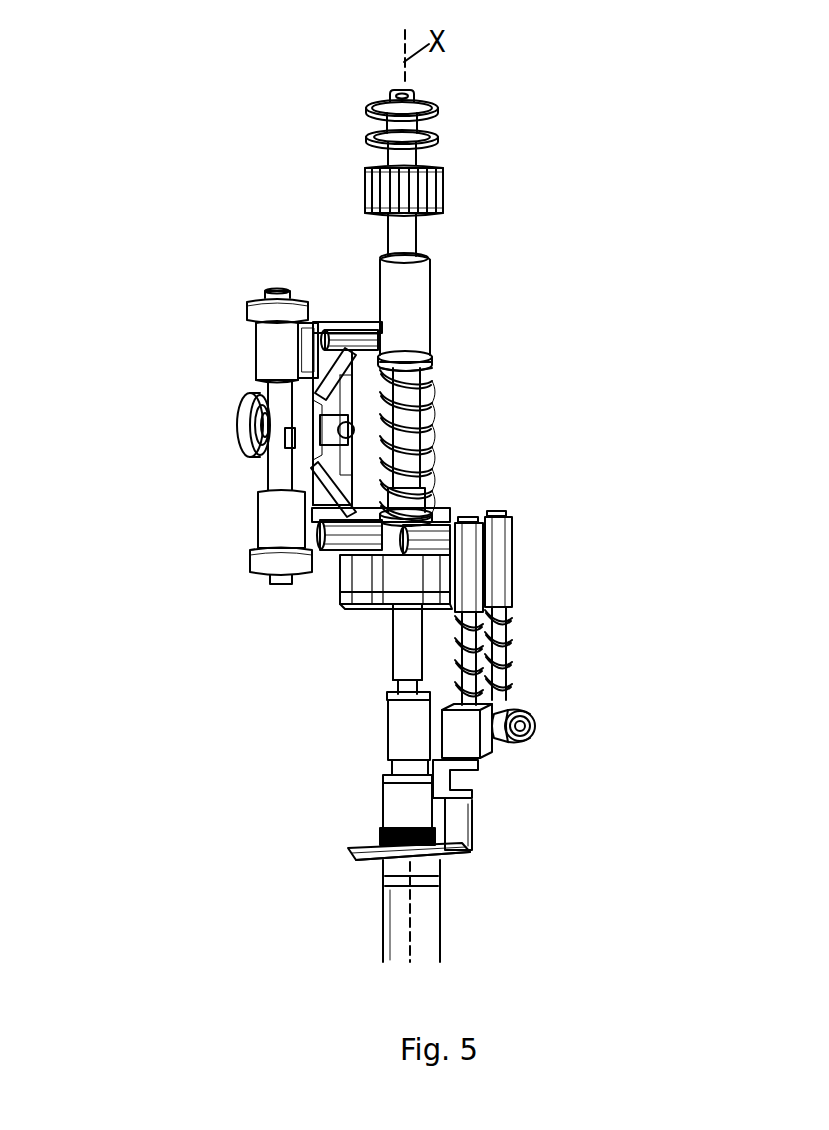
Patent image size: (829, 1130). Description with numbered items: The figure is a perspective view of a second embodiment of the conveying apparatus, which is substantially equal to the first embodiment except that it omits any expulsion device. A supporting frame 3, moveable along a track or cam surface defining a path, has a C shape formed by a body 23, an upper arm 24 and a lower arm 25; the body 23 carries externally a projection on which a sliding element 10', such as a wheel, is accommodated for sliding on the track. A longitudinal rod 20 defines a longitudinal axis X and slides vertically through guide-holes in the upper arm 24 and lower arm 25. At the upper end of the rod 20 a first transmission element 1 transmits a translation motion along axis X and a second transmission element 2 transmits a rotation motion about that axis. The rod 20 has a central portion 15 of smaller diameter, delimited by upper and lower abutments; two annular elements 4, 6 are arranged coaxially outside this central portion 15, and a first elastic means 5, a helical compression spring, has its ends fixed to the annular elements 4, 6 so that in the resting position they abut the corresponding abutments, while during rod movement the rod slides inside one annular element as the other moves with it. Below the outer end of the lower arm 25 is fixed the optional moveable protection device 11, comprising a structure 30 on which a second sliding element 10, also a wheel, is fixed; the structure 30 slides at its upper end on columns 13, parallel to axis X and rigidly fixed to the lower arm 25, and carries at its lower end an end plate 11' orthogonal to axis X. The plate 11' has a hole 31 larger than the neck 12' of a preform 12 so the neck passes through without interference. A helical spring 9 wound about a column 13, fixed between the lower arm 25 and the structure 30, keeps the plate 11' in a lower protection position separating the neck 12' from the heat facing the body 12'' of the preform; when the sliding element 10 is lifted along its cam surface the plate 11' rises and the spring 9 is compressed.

The first transmission element 1 is at (438, 103).
The second transmission element 2 is at (445, 185).
The supporting frame 3 is at (253, 338).
The annular element 4 is at (418, 380).
The first elastic means 5 is at (430, 412).
The annular element 6 is at (418, 495).
The helical spring 9 is at (493, 660).
The second sliding element 10 is at (566, 709).
The sliding element 10' is at (186, 441).
The moveable protection device 11 is at (566, 688).
The end plate 11' is at (521, 857).
The preform 12 is at (343, 911).
The neck 12' is at (512, 878).
The body 12'' is at (476, 925).
The columns 13 is at (468, 627).
The central portion 15 is at (412, 445).
The longitudinal rod 20 is at (421, 238).
The body 23 is at (302, 447).
The upper arm 24 is at (341, 321).
The lower arm 25 is at (452, 520).
The structure 30 is at (485, 745).
The hole 31 is at (372, 848).